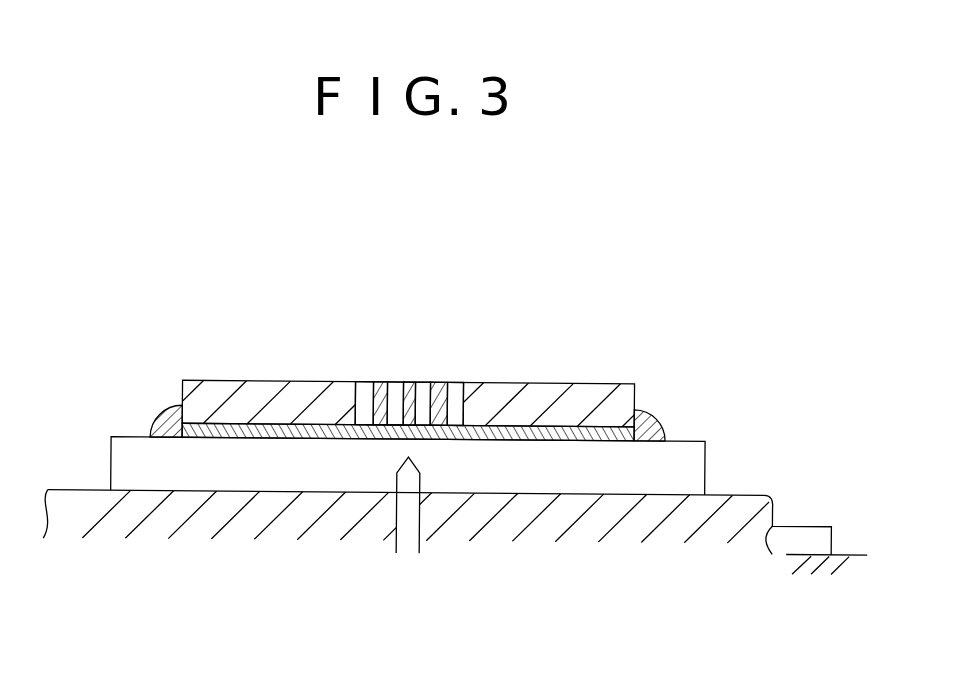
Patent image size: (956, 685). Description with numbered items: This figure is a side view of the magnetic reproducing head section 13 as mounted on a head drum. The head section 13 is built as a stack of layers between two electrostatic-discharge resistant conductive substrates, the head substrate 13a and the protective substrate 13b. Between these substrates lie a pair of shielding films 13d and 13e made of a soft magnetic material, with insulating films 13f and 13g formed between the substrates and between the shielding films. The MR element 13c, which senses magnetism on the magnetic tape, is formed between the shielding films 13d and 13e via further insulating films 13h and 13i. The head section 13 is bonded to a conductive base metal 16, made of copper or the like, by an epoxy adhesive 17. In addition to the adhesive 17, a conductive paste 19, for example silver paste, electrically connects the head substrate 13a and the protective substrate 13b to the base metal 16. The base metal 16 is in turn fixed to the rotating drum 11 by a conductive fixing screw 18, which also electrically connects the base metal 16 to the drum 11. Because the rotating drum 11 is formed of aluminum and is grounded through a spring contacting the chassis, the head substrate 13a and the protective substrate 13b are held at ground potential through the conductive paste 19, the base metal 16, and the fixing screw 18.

The rotating drum 11 is at (75, 485).
The magnetic reproducing head section 13 is at (580, 274).
The head substrate 13a is at (592, 382).
The protective substrate 13b is at (238, 382).
The MR element 13c is at (405, 382).
The shielding film 13d is at (437, 382).
The shielding film 13e is at (384, 382).
The insulating film 13f is at (458, 382).
The insulating film 13g is at (364, 382).
The insulating film 13h is at (422, 382).
The insulating film 13i is at (394, 382).
The base metal 16 is at (445, 466).
The epoxy adhesive 17 is at (228, 436).
The fixing screw 18 is at (420, 541).
The conductive paste 19 is at (160, 408).